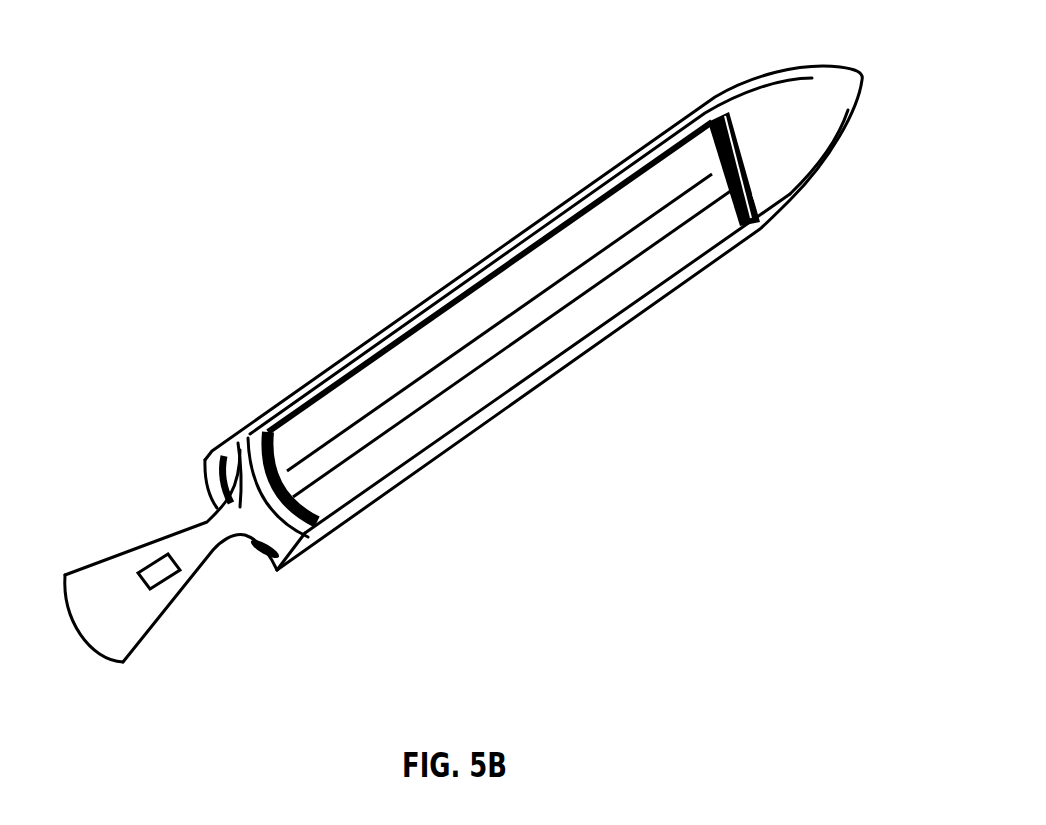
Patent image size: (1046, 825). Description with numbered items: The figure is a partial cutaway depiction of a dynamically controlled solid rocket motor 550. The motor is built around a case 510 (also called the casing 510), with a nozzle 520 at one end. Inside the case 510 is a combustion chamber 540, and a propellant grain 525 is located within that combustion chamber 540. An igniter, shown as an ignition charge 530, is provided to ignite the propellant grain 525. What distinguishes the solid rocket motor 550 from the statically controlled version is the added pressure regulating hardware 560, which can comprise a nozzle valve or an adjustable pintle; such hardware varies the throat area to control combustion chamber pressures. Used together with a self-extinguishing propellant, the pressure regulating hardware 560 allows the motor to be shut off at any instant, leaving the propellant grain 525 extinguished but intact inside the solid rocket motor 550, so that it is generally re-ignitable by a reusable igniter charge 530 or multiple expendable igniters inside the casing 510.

The dynamically controlled solid rocket motor 550 is at (454, 353).
The case 510 is at (497, 400).
The nozzle 520 is at (137, 547).
The propellant grain 525 is at (347, 452).
The ignition charge 530 is at (700, 140).
The combustion chamber 540 is at (373, 373).
The pressure regulating hardware 560 is at (172, 570).